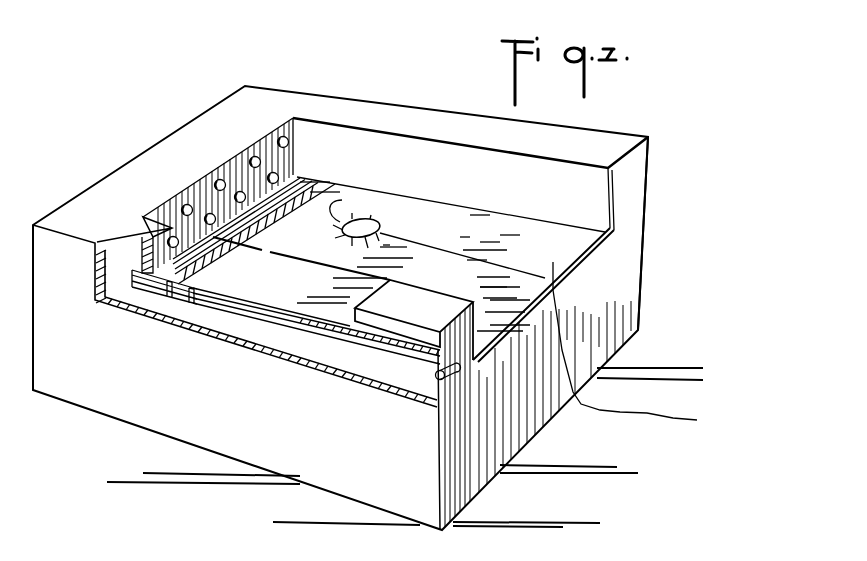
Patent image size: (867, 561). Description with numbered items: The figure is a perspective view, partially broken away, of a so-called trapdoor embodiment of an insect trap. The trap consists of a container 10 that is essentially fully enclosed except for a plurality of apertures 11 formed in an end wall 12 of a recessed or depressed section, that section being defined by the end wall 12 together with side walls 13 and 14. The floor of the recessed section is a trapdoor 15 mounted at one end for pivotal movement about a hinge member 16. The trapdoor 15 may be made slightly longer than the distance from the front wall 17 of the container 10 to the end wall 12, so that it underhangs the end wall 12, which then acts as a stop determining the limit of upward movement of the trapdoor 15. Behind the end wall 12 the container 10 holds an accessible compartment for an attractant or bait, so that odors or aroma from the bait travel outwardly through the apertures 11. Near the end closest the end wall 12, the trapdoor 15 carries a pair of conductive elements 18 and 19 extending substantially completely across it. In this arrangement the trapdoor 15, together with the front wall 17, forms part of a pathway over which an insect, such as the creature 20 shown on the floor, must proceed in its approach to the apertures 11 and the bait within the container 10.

The container 10 is at (390, 96).
The apertures 11 is at (278, 140).
The end wall 12 is at (172, 223).
The side wall 13 is at (432, 157).
The side wall 14 is at (466, 300).
The trapdoor 15 is at (556, 260).
The hinge member 16 is at (436, 374).
The front wall 17 is at (630, 262).
The conductive element 18 is at (333, 188).
The conductive element 19 is at (318, 182).
The creature 20 is at (392, 213).